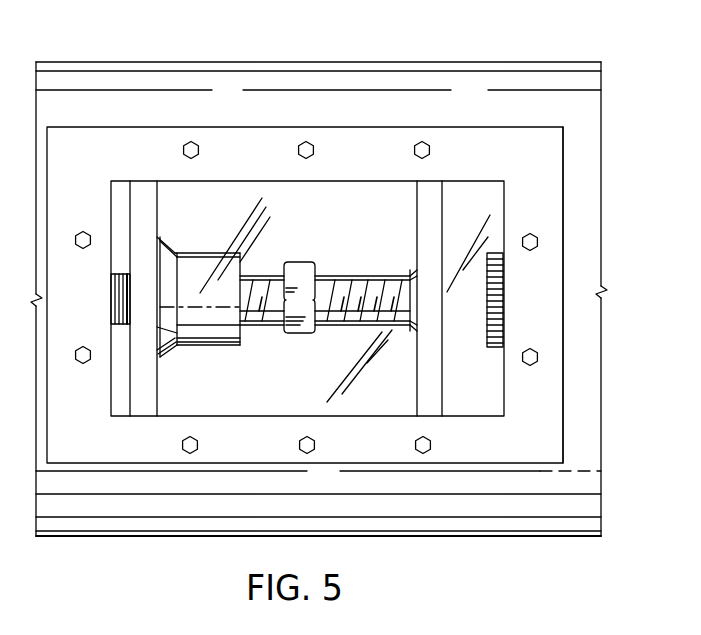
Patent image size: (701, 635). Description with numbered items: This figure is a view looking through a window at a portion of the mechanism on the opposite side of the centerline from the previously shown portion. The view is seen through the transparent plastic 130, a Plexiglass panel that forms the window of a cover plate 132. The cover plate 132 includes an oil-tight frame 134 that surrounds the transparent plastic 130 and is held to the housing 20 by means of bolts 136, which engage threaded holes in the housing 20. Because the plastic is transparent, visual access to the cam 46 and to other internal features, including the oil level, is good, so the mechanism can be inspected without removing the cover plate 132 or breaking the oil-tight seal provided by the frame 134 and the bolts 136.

The housing 20 is at (498, 58).
The cam 46 is at (116, 326).
The transparent plastic 130 is at (206, 190).
The cover plate 132 is at (575, 250).
The oil-tight frame 134 is at (550, 215).
The bolts 136 is at (539, 355).